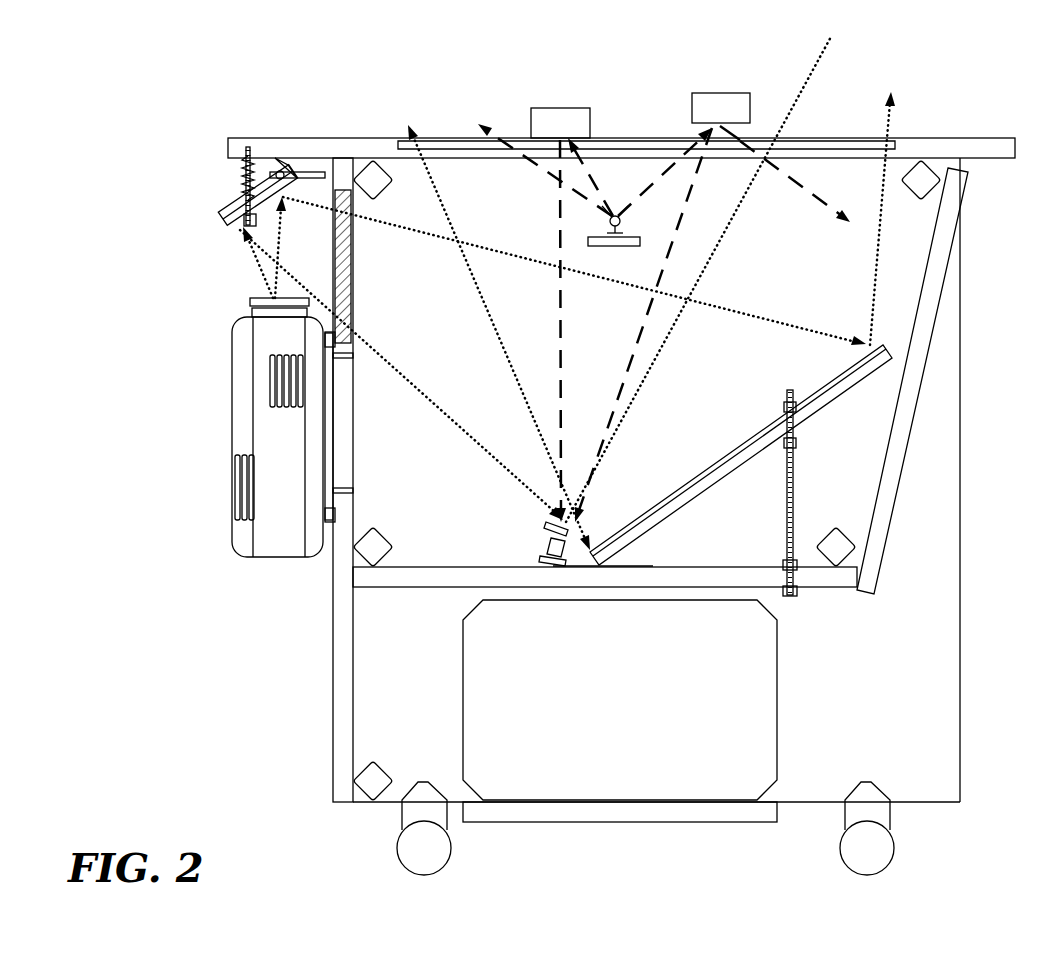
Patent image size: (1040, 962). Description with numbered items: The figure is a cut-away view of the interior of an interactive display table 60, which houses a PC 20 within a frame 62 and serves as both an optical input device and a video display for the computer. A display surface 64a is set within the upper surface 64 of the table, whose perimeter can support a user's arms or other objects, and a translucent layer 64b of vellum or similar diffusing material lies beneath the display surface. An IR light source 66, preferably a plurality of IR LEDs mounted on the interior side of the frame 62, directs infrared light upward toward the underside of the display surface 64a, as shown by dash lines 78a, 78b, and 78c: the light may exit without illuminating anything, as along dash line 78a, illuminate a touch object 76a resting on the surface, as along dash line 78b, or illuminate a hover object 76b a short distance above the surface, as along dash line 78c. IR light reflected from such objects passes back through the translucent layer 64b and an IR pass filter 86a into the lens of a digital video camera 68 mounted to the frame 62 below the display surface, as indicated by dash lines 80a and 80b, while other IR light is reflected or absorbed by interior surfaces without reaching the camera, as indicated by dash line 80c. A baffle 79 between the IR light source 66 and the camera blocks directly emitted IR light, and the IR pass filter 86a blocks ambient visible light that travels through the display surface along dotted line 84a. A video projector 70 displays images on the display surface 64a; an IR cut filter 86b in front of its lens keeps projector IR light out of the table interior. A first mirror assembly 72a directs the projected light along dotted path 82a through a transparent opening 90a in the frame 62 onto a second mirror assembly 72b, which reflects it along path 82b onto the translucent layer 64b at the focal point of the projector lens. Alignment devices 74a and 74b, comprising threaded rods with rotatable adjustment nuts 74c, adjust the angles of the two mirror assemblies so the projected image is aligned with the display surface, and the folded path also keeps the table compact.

The PC 20 is at (778, 700).
The interactive display table 60 is at (223, 635).
The frame 62 is at (333, 693).
The upper surface 64 is at (373, 138).
The display surface 64a is at (455, 141).
The translucent layer 64b is at (815, 141).
The IR light source 66 is at (606, 222).
The digital video camera 68 is at (548, 540).
The video projector 70 is at (232, 403).
The first mirror assembly 72a is at (230, 228).
The second mirror assembly 72b is at (708, 468).
The alignment device 74a is at (313, 175).
The alignment device 74b is at (794, 470).
The rotatable adjustment nut 74c is at (219, 210).
The touch object 76a is at (545, 108).
The hover object 76b is at (705, 93).
The dash line 78a is at (535, 160).
The dash line 78b is at (594, 169).
The dash line 78c is at (668, 152).
The baffle 79 is at (616, 248).
The dash line 80a is at (557, 312).
The dash line 80b is at (632, 342).
The dash line 80c is at (812, 185).
The dotted path 82a is at (292, 277).
The path 82b is at (468, 268).
The dotted line 84a is at (826, 48).
The IR pass filter 86a is at (548, 524).
The IR cut filter 86b is at (252, 303).
The transparent opening 90a is at (353, 312).